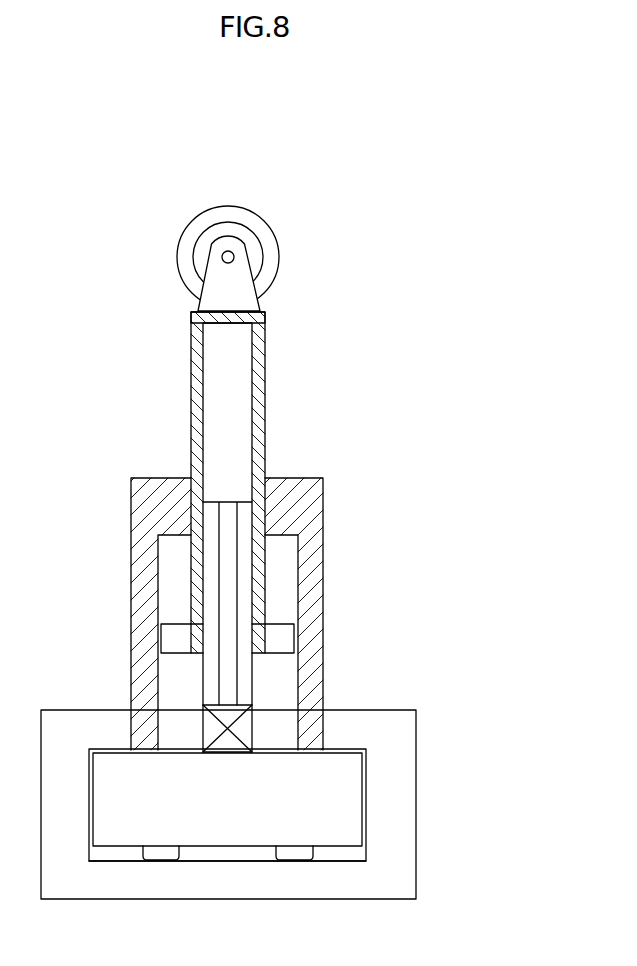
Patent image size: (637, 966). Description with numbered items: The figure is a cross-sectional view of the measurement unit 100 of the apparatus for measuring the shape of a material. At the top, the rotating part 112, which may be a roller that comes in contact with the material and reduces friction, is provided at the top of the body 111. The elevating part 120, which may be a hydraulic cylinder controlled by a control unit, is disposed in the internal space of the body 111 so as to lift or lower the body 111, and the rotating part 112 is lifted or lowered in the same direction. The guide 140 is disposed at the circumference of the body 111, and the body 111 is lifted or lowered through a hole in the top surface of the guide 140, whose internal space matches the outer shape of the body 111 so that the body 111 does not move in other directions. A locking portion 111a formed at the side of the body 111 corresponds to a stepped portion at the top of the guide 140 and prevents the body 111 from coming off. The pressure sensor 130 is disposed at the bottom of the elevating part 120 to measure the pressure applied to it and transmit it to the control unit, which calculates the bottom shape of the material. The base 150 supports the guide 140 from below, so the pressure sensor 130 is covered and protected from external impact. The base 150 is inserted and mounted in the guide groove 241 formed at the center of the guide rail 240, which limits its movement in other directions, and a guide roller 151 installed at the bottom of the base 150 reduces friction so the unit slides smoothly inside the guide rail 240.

The measurement unit 100 is at (383, 492).
The body 111 is at (257, 383).
The locking portion 111a is at (287, 638).
The rotating part 112 is at (273, 257).
The elevating part 120 is at (224, 457).
The pressure sensor 130 is at (243, 727).
The guide 140 is at (315, 553).
The base 150 is at (350, 780).
The guide roller 151 is at (293, 853).
The guide rail 240 is at (393, 838).
The guide groove 241 is at (360, 854).